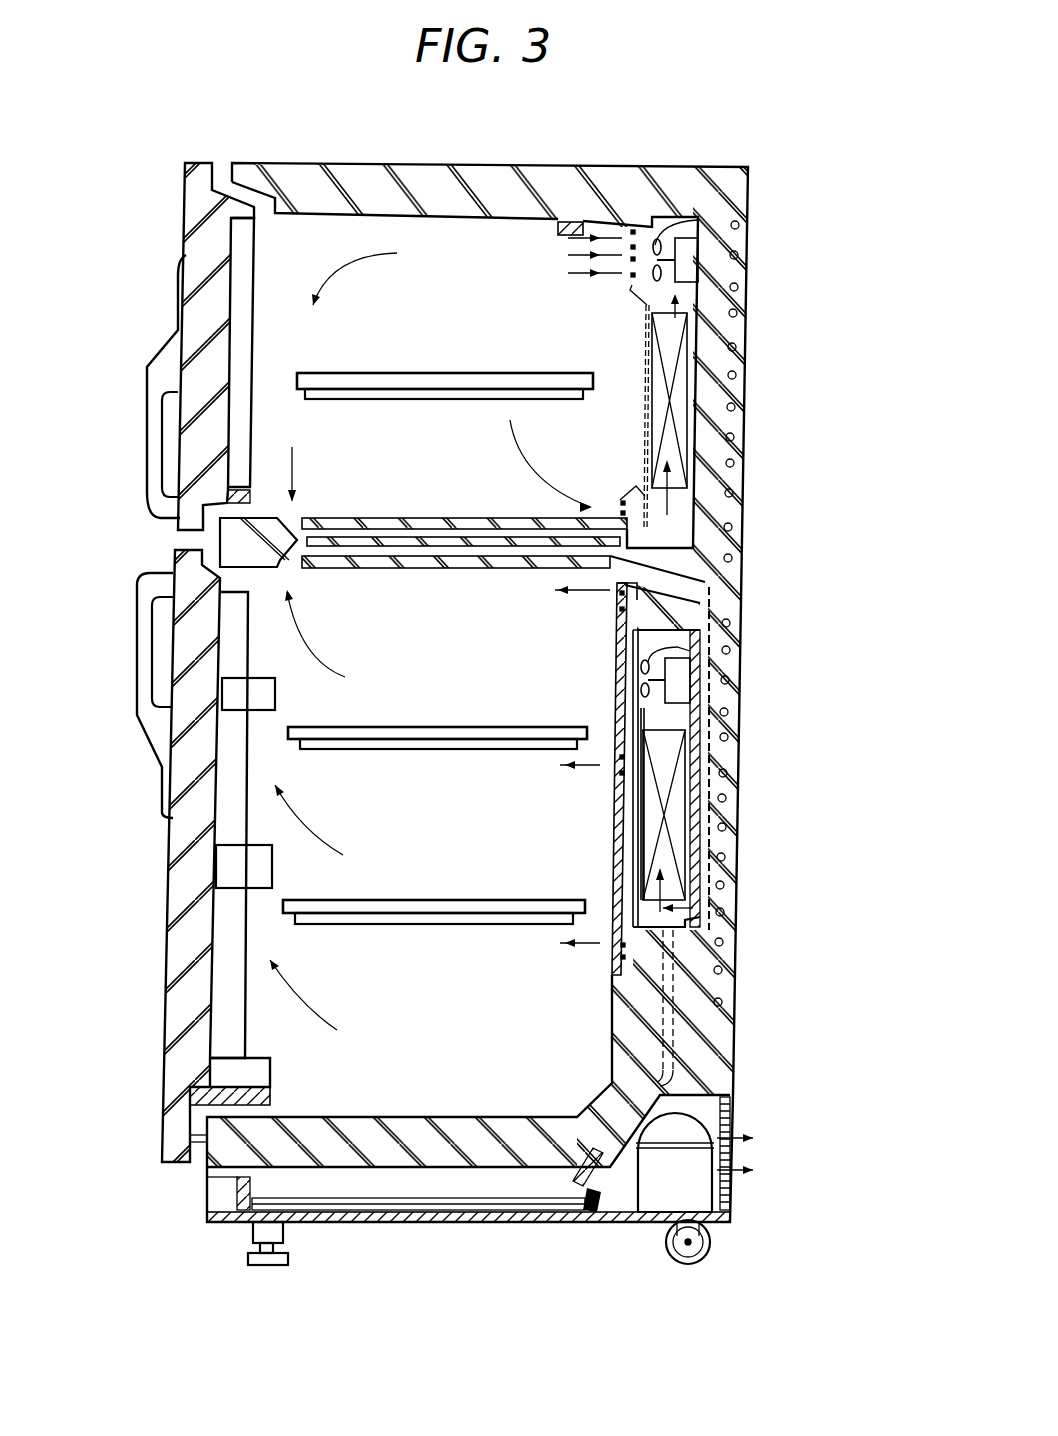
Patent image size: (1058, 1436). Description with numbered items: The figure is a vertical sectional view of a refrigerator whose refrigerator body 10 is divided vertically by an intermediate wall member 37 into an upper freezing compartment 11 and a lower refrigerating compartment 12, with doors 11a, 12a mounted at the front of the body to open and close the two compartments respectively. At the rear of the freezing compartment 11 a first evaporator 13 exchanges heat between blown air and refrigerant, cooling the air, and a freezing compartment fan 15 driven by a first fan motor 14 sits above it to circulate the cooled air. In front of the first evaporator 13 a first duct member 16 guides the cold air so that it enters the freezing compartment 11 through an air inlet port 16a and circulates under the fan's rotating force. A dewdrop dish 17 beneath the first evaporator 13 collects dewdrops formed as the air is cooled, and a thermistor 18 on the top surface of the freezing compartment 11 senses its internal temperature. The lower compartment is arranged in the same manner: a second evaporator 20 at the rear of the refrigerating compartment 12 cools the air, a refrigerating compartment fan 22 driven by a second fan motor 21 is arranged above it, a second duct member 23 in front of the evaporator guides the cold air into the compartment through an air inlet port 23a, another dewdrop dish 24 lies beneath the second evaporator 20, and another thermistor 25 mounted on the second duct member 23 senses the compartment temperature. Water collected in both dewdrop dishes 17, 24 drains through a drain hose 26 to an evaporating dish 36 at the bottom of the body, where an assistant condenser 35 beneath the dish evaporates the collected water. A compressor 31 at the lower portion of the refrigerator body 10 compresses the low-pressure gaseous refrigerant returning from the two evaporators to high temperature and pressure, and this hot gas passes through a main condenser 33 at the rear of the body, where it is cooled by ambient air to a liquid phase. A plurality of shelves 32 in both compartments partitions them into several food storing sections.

The refrigerator body 10 is at (753, 163).
The freezing compartment 11 is at (443, 258).
The door 11a is at (197, 257).
The refrigerating compartment 12 is at (568, 1056).
The door 12a is at (165, 1028).
The first evaporator 13 is at (678, 360).
The first fan motor 14 is at (688, 263).
The freezing compartment fan 15 is at (697, 217).
The first duct member 16 is at (645, 385).
The air inlet port 16a is at (620, 233).
The dewdrop dish 17 is at (685, 540).
The thermistor 18 is at (572, 220).
The second evaporator 20 is at (673, 807).
The second fan motor 21 is at (680, 683).
The refrigerating compartment fan 22 is at (660, 653).
The second duct member 23 is at (628, 833).
The air inlet port 23a is at (625, 603).
The dewdrop dish 24 is at (635, 927).
The thermistor 25 is at (642, 855).
The drain hose 26 is at (673, 1073).
The compressor 31 is at (690, 1190).
The shelves 32 is at (557, 397).
The main condenser 33 is at (740, 224).
The assistant condenser 35 is at (582, 1223).
The evaporating dish 36 is at (608, 1225).
The intermediate wall member 37 is at (258, 572).